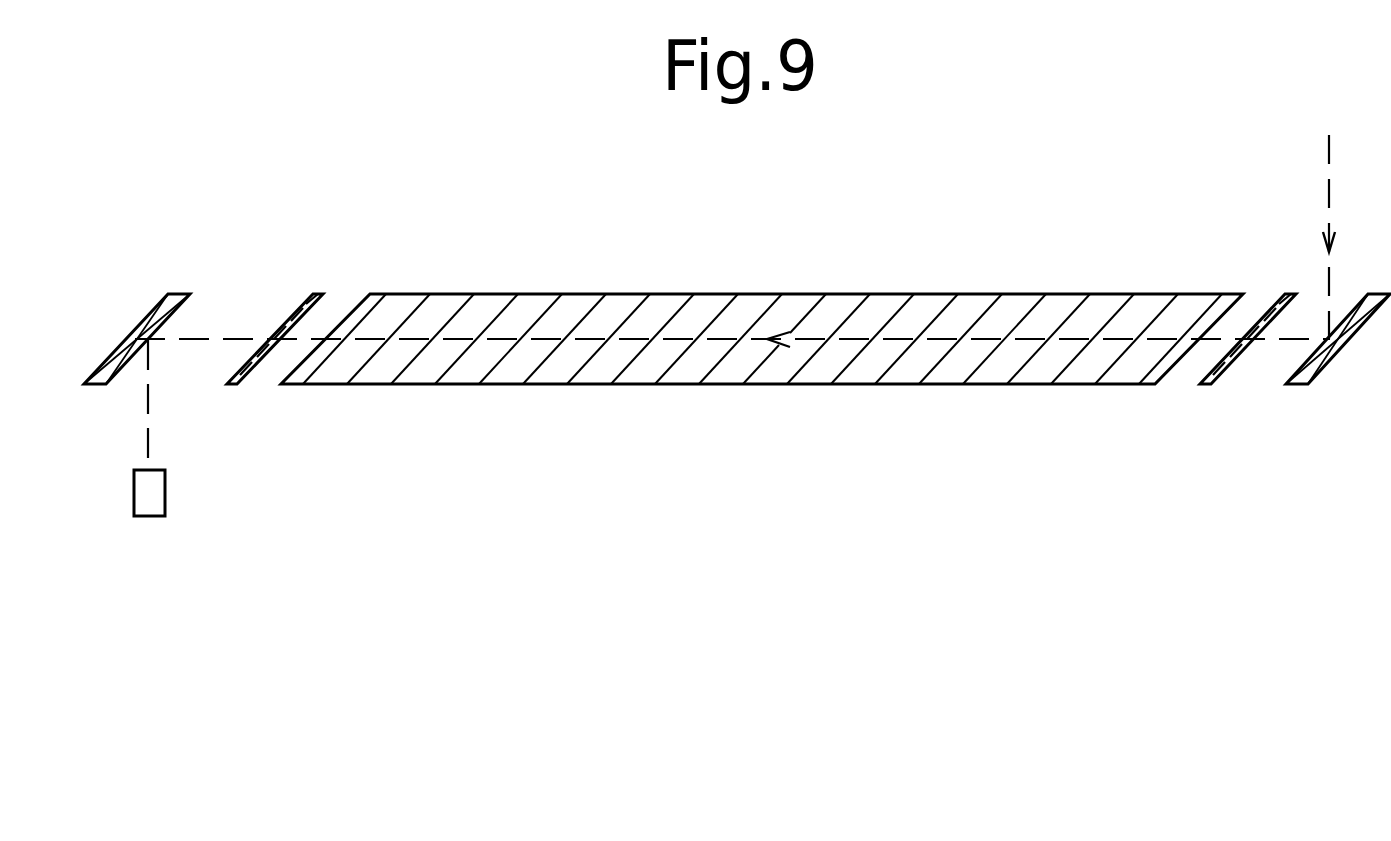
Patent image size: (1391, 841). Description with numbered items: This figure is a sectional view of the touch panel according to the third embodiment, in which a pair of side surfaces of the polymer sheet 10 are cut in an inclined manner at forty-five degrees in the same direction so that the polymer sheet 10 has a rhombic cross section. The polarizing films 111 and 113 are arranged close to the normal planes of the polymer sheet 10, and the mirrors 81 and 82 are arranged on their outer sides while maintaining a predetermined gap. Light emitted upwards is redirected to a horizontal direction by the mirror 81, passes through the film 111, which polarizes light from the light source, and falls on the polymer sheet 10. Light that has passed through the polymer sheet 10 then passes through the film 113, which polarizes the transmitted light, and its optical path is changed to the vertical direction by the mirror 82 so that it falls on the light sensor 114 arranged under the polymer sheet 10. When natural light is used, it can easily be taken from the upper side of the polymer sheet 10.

The polymer sheet 10 is at (783, 294).
The mirror 81 is at (1345, 346).
The mirror 82 is at (182, 294).
The polarizing film 111 is at (1202, 385).
The polarizing film 113 is at (318, 294).
The light sensor 114 is at (166, 492).